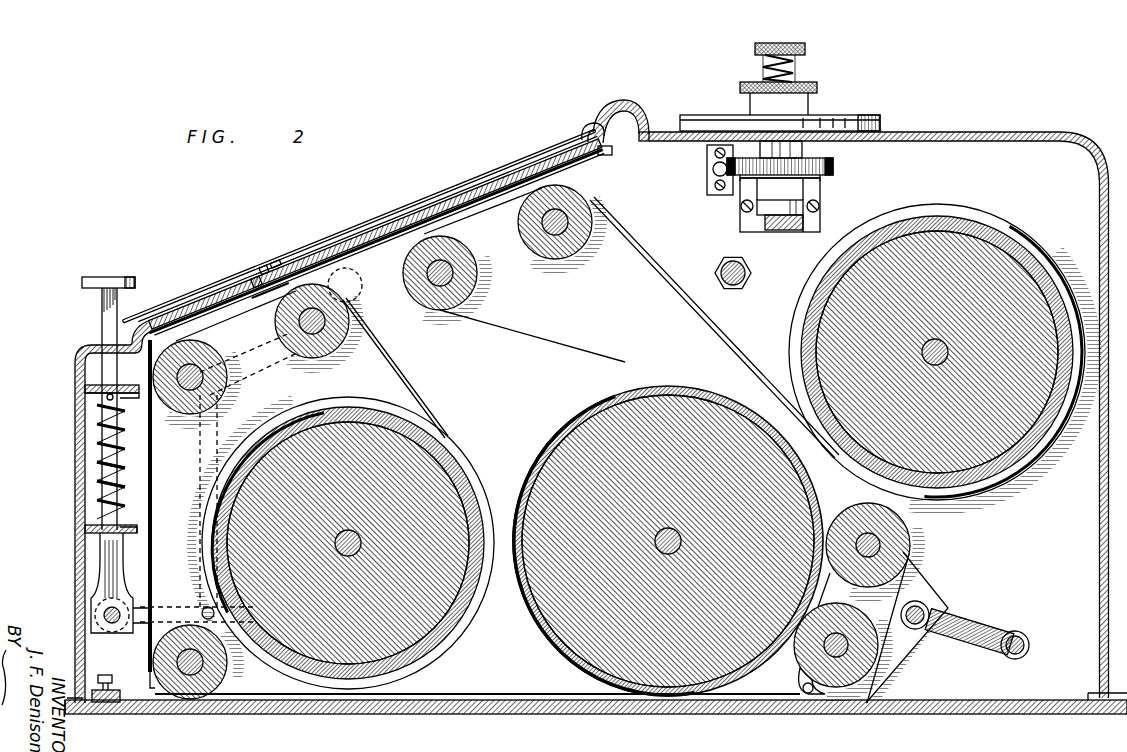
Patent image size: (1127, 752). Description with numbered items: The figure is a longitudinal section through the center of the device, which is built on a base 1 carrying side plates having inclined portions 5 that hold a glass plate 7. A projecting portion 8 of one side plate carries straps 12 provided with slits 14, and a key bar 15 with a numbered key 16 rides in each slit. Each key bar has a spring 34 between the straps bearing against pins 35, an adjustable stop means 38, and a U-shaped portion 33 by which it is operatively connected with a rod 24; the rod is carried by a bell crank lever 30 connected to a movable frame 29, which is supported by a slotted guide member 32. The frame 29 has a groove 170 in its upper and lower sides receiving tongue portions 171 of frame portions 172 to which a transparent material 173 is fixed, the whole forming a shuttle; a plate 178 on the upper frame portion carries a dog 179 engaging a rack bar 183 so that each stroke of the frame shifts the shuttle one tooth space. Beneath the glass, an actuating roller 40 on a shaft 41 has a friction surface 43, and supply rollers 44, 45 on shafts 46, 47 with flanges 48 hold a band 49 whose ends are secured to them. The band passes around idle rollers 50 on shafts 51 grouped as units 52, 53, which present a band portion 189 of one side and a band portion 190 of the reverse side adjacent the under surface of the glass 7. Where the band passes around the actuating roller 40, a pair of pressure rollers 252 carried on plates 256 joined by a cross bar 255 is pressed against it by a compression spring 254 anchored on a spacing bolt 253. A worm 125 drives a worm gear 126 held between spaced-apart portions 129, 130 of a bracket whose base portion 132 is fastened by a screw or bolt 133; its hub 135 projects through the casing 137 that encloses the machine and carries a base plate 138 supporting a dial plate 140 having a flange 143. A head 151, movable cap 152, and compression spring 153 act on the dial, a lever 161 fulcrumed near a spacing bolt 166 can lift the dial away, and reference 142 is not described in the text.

The base 1 is at (580, 713).
The inclined portions 5 is at (603, 147).
The glass plate 7 is at (182, 312).
The projecting portion 8 is at (90, 430).
The strap 12 is at (95, 387).
The slits 14 is at (97, 398).
The key bar 15 is at (110, 485).
The key 16 is at (117, 279).
The rod 24 is at (100, 607).
The movable frame 29 is at (256, 298).
The bell crank lever 30 is at (202, 462).
The guide member 32 is at (178, 325).
The U-shaped portions 33 is at (97, 613).
The spring 34 is at (93, 457).
The pins 35 is at (113, 399).
The adjustable stop means 38 is at (105, 675).
The actuating roller 40 is at (597, 428).
The shaft 41 is at (673, 535).
The friction surface 43 is at (556, 436).
The supply roller 44 is at (1012, 273).
The supply roller 45 is at (410, 465).
The shaft 46 is at (925, 350).
The shaft 47 is at (353, 535).
The flanges 48 is at (473, 472).
The band 49 is at (707, 325).
The idle rollers 50 is at (517, 238).
The shafts 51 is at (520, 224).
The unit 52 is at (525, 251).
The unit 53 is at (255, 367).
The worm 125 is at (719, 170).
The worm gear 126 is at (827, 174).
The spaced-apart portion 129 is at (817, 160).
The spaced-apart portion 130 is at (813, 183).
The base portion 132 is at (810, 228).
The screw or bolt 133 is at (740, 206).
The hub 135 is at (805, 148).
The casing 137 is at (1017, 133).
The base plate 138 is at (878, 127).
The dial plate 140 is at (863, 115).
The adjusting screw 142 is at (780, 73).
The flange 143 is at (753, 210).
The head 151 is at (803, 52).
The movable cap 152 is at (790, 103).
The compression spring 153 is at (787, 73).
The lever 161 is at (777, 228).
The spacing bolt 166 is at (718, 270).
The groove 170 is at (264, 291).
The tongue portions 171 is at (262, 300).
The frame portions 172 is at (272, 288).
The transparent material 173 is at (390, 222).
The plate 178 is at (612, 140).
The dog 179 is at (580, 130).
The rack bar 183 is at (620, 118).
The band portion 189 is at (470, 212).
The band portion 190 is at (213, 304).
The pressure rollers 252 is at (905, 546).
The spacing bolt 253 is at (1030, 641).
The compression spring 254 is at (982, 626).
The cross bar 255 is at (922, 612).
The plates 256 is at (923, 588).